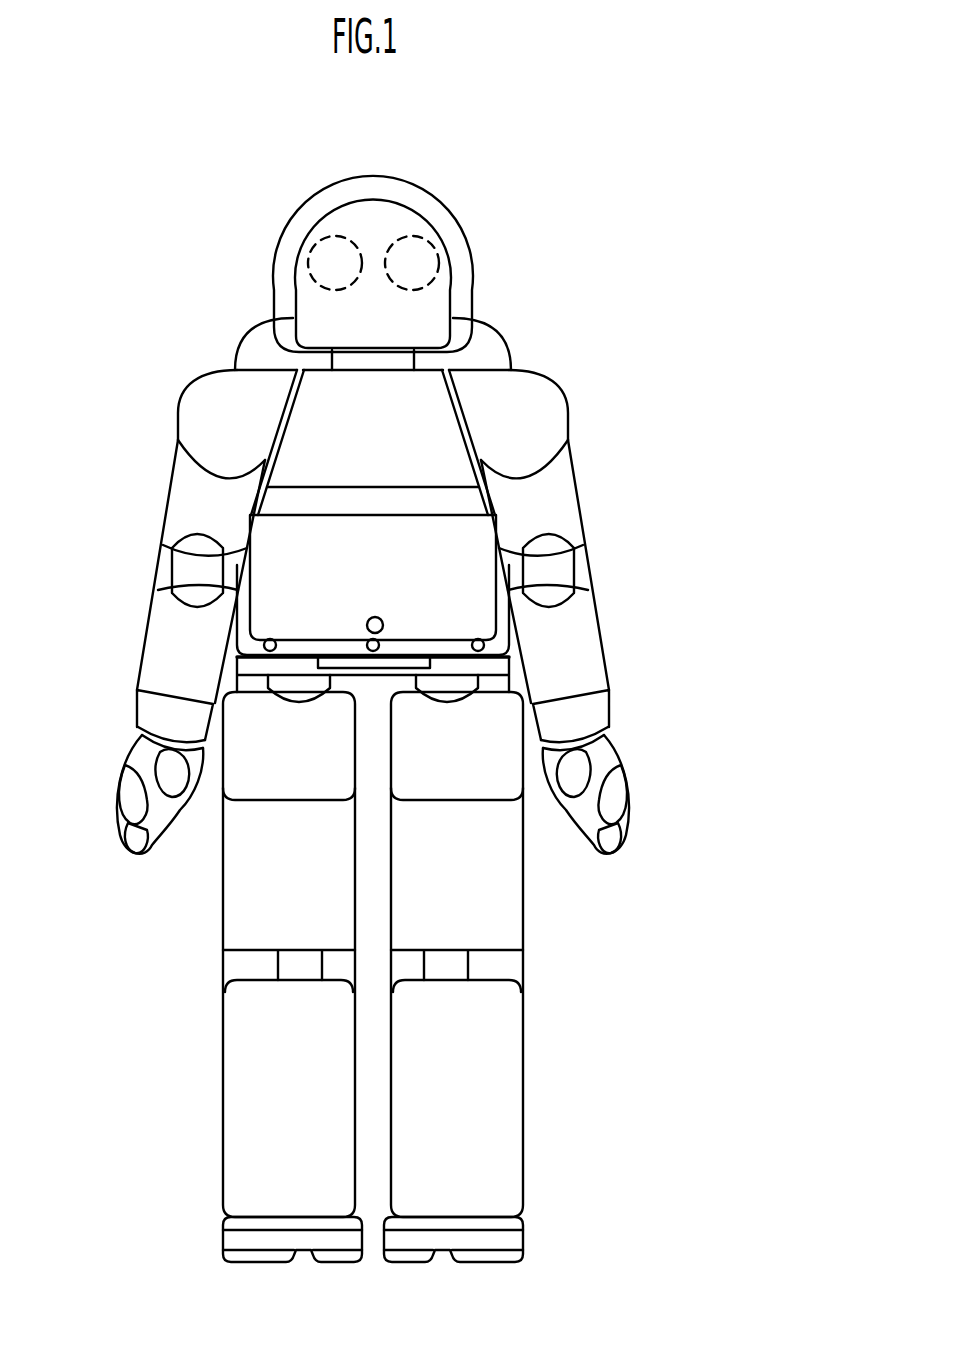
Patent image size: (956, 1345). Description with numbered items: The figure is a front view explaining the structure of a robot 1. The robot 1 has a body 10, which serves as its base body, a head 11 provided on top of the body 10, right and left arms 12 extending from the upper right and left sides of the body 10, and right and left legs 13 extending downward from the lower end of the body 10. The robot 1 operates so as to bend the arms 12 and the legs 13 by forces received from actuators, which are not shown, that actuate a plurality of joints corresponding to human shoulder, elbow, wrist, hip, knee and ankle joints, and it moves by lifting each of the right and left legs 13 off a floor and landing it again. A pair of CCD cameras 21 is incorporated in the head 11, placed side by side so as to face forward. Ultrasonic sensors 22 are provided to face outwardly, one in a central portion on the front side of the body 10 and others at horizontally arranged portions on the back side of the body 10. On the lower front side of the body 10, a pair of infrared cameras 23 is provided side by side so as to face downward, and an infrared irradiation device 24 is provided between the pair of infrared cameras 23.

The robot 1 is at (665, 252).
The body 10 is at (322, 530).
The head 11 is at (457, 193).
The arms 12 is at (155, 450).
The legs 13 is at (205, 1075).
The CCD cameras 21 is at (318, 240).
The ultrasonic sensors 22 is at (376, 617).
The infrared cameras 23 is at (268, 639).
The infrared irradiation device 24 is at (380, 645).